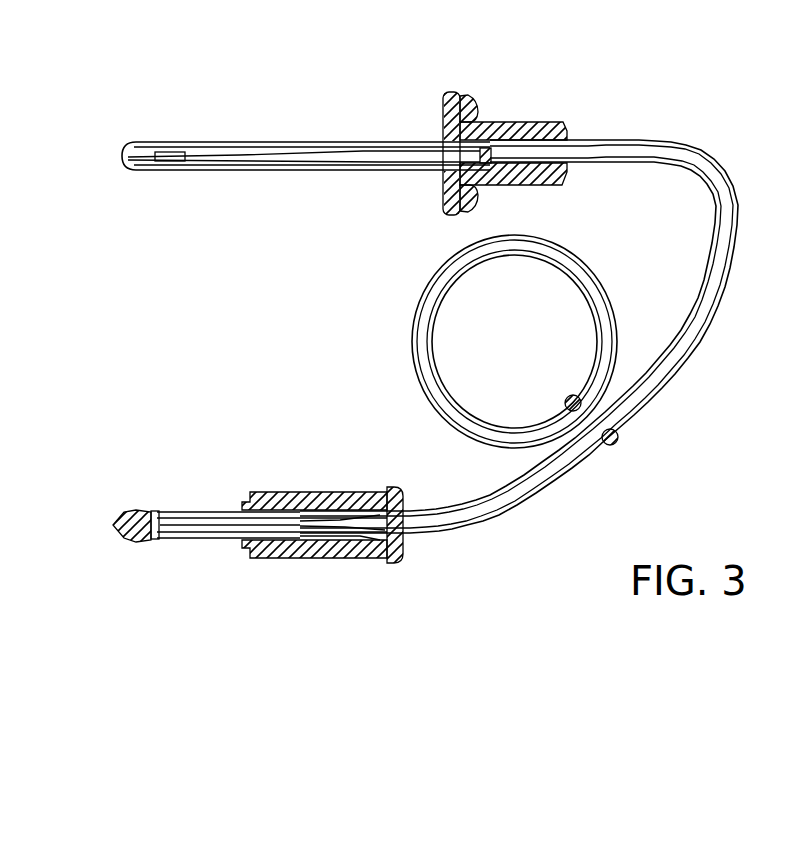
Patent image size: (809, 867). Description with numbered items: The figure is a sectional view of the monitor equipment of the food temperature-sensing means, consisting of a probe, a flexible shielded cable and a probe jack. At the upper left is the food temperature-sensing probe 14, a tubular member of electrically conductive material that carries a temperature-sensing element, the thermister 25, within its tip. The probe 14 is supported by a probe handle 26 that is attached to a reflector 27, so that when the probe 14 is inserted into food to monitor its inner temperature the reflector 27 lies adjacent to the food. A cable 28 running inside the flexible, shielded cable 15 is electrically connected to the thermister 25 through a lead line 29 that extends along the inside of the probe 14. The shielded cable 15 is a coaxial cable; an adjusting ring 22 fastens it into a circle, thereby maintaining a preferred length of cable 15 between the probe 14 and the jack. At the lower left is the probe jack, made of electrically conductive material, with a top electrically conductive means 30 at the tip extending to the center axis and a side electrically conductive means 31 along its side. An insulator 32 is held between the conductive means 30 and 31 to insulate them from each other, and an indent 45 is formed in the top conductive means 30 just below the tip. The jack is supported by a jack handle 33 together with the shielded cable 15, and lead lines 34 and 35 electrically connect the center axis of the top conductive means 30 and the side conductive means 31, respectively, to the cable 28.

The food temperature-sensing probe 14 is at (229, 172).
The flexible, shielded cable 15 is at (740, 212).
The adjusting ring 22 is at (614, 447).
The thermister 25 is at (168, 151).
The probe handle 26 is at (531, 122).
The reflector 27 is at (446, 92).
The cable 28 is at (488, 165).
The lead line 29 is at (331, 156).
The top electrically conductive means 30 is at (113, 526).
The side electrically conductive means 31 is at (209, 538).
The insulator 32 is at (162, 537).
The jack handle 33 is at (320, 492).
The lead line 34 is at (356, 545).
The lead line 35 is at (350, 522).
The indent 45 is at (152, 540).